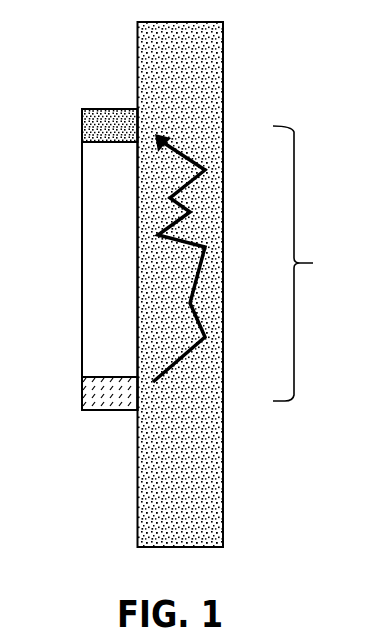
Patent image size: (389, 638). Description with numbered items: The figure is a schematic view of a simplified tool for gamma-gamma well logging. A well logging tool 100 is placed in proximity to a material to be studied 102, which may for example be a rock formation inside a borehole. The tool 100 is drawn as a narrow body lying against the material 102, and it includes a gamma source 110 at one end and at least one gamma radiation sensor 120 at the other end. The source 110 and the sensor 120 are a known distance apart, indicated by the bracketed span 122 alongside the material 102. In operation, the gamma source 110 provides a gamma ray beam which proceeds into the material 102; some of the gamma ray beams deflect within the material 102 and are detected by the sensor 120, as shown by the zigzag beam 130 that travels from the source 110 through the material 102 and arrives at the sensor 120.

The well logging tool 100 is at (95, 259).
The material to be studied 102 is at (148, 510).
The gamma source 110 is at (91, 394).
The gamma radiation sensor 120 is at (90, 127).
The known distance 122 is at (321, 263).
The beam 130 is at (197, 344).